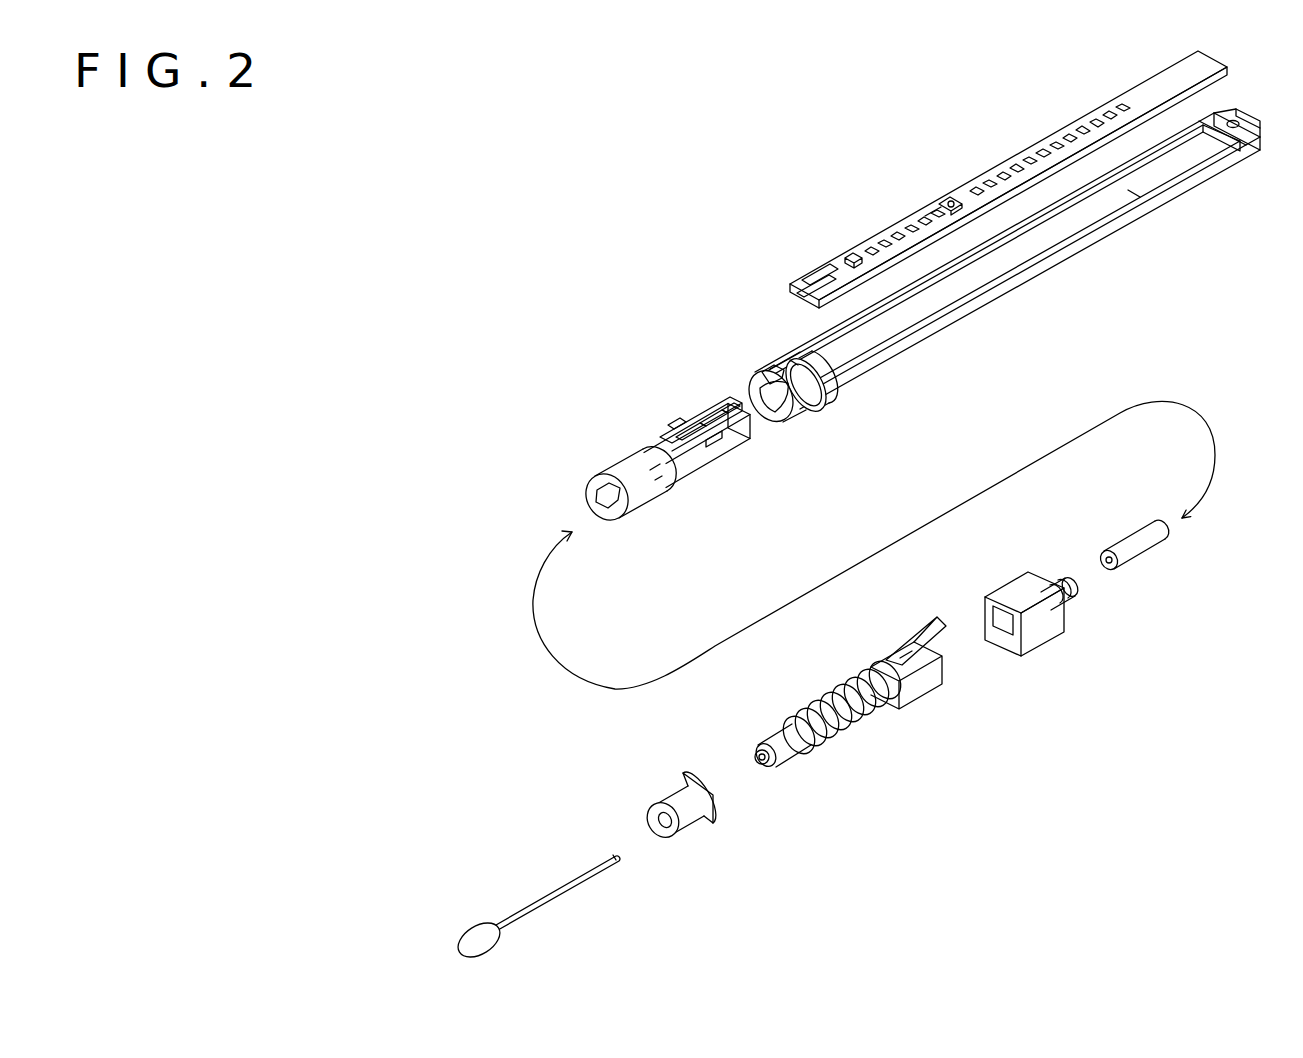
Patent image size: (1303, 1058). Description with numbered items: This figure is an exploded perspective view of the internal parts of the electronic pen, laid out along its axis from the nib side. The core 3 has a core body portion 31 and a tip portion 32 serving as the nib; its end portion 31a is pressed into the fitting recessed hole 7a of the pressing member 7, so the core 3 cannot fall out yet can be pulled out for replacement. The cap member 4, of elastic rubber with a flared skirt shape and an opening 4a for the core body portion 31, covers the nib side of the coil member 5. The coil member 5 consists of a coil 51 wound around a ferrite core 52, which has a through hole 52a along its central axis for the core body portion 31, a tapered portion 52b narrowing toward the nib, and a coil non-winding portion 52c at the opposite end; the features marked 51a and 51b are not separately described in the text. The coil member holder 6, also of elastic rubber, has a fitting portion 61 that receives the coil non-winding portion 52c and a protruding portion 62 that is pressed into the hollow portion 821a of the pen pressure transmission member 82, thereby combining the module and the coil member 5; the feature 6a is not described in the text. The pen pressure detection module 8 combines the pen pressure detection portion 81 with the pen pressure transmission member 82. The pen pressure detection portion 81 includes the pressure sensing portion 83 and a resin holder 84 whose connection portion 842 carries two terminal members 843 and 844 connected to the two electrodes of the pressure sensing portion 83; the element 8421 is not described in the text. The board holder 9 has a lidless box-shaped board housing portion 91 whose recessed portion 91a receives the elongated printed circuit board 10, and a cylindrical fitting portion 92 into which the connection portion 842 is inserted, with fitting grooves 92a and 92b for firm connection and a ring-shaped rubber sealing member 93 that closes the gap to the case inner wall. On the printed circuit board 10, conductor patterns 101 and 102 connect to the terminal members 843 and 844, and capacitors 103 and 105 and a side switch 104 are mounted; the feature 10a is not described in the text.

The core 3 is at (541, 888).
The core body portion 31 is at (566, 871).
The end portion 31a is at (615, 856).
The tip portion 32 is at (477, 912).
The cap member 4 is at (679, 849).
The opening 4a is at (665, 828).
The coil member 5 is at (842, 700).
The coil 51 is at (928, 679).
The ferrule end 51a is at (903, 643).
The ferrule side 51b is at (955, 667).
The ferrite core 52 is at (833, 700).
The through hole 52a is at (764, 764).
The tapered portion 52b is at (766, 743).
The coil non-winding portion 52c is at (917, 657).
The coil member holder 6 is at (1056, 609).
The stop ring opening 6a is at (1001, 632).
The fitting portion 61 is at (1048, 622).
The protruding portion 62 is at (1072, 603).
The pressing member 7 is at (1129, 556).
The fitting recessed hole 7a is at (1106, 552).
The pen pressure detection module 8 is at (657, 458).
The pen pressure detection portion 81 is at (712, 475).
The pen pressure transmission member 82 is at (608, 493).
The hollow portion 821a is at (592, 473).
The pressure sensing portion 83 is at (677, 427).
The holder 84 is at (673, 465).
The connection portion 842 is at (688, 418).
The latch arm tip 8421 is at (731, 411).
The terminal member 843 is at (712, 424).
The terminal member 844 is at (718, 444).
The board holder 9 is at (1000, 286).
The board housing portion 91 is at (1078, 243).
The recessed portion 91a is at (1135, 193).
The fitting portion 92 is at (842, 386).
The fitting groove 92a is at (775, 368).
The fitting groove 92b is at (822, 372).
The sealing member 93 is at (822, 408).
The printed circuit board 10 is at (1010, 160).
The board holes 10a is at (1123, 102).
The conductor pattern 101 is at (807, 273).
The conductor pattern 102 is at (793, 296).
The capacitor 103 is at (852, 251).
The side switch 104 is at (956, 194).
The capacitor 105 is at (940, 213).